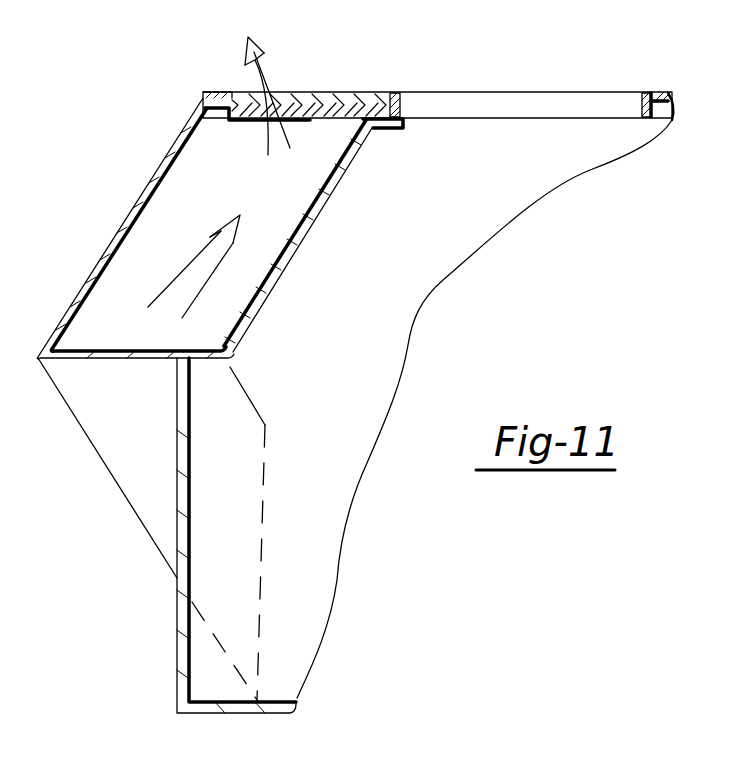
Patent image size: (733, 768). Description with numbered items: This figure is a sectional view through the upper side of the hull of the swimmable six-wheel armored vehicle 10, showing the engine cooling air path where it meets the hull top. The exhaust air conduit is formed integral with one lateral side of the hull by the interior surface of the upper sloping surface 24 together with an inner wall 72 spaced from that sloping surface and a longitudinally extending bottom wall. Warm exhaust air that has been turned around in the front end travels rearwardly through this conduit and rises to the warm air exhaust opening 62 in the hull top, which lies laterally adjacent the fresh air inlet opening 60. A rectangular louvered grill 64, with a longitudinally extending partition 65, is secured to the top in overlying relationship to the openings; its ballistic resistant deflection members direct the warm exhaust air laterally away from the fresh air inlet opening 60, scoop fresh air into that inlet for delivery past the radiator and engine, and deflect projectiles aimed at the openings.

The swimmable six-wheel armored vehicle 10 is at (242, 253).
The upper sloping surface 24 is at (117, 240).
The fresh air inlet opening 60 is at (477, 100).
The warm air exhaust opening 62 is at (312, 92).
The louvered grill 64 is at (560, 69).
The partition 65 is at (396, 92).
The inner wall 72 is at (292, 262).